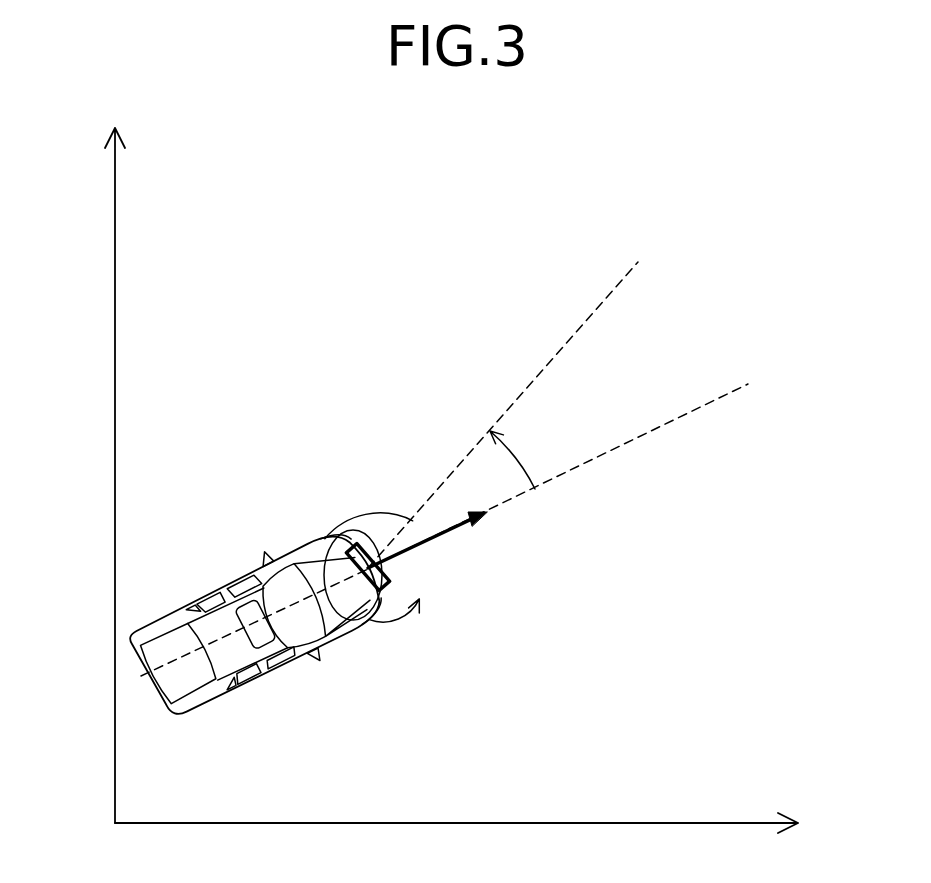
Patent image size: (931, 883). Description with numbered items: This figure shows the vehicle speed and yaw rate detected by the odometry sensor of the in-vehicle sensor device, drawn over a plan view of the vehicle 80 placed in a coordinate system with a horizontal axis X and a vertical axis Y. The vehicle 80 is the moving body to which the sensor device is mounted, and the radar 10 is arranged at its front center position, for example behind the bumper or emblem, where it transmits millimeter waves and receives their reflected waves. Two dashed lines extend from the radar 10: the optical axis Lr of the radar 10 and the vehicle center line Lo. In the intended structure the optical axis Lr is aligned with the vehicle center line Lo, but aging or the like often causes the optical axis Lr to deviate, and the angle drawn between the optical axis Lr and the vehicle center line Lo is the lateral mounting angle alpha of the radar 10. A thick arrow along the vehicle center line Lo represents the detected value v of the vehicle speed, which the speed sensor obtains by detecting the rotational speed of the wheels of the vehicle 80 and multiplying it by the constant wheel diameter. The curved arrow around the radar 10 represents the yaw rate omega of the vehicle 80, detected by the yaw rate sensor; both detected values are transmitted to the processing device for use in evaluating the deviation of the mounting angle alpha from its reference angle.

The vehicle 80 is at (232, 583).
The radar 10 is at (397, 561).
The optical axis Lr is at (520, 403).
The vehicle center line Lo is at (581, 465).
The detected value of the vehicle speed v is at (433, 540).
The mounting angle alpha is at (520, 455).
The yaw rate omega is at (373, 586).
The axis X is at (459, 844).
The axis Y is at (97, 469).